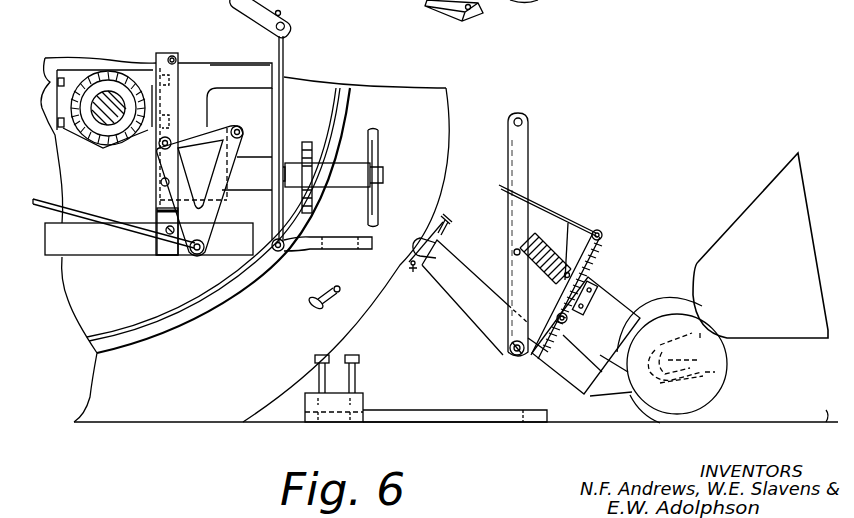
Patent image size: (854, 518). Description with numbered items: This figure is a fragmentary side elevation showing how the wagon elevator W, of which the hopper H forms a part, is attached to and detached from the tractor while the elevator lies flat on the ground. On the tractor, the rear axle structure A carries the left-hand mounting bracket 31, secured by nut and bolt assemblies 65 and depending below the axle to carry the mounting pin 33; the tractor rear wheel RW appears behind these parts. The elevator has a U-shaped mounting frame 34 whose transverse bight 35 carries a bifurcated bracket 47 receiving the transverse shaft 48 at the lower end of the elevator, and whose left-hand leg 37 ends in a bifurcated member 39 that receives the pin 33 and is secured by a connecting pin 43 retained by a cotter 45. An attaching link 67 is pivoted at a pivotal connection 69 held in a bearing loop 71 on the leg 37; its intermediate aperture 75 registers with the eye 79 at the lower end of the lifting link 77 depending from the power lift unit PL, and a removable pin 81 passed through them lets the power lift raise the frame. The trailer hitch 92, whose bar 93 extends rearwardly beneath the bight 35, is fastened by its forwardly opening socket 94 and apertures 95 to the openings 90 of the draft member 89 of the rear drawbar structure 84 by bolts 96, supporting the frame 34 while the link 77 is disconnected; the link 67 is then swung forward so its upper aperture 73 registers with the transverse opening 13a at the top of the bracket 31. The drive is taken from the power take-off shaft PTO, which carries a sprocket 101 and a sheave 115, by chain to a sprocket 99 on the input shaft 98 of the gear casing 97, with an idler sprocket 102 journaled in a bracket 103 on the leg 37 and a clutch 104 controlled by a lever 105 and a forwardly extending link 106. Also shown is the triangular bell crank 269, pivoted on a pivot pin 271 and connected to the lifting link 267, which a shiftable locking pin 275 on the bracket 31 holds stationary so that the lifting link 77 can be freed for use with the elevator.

The rear axle structure A is at (78, 73).
The nut and bolt assemblies 65 is at (52, 100).
The left-hand mounting bracket 31 is at (166, 52).
The transverse opening 13a is at (173, 57).
The mounting pin 33 is at (170, 236).
The triangular bell crank 269 is at (206, 248).
The pivot pin 271 is at (162, 147).
The locking pin 275 is at (162, 183).
The lifting link 267 is at (76, 215).
The rear drawbar structure 84 is at (58, 258).
The power lift unit PL is at (247, 70).
The lifting link 77 is at (284, 68).
The mounting frame 34 is at (330, 0).
The elongated bar 93 is at (485, 12).
The trailer hitch 92 is at (443, 10).
The rear wheel RW is at (446, 91).
The power take-off shaft PTO is at (286, 165).
The sprocket 101 is at (307, 145).
The sheave 115 is at (378, 141).
The eye 79 is at (272, 250).
The draft member 89 is at (292, 251).
The openings 90 is at (356, 250).
The removable pin 81 is at (329, 306).
The pins or bolts 96 is at (350, 354).
The apertures 95 is at (350, 414).
The forwardly opening socket 94 is at (305, 396).
The connecting pin 43 is at (446, 218).
The cotter 45 is at (408, 266).
The bifurcated member 39 is at (428, 260).
The left-hand leg 37 is at (496, 312).
The aperture 73 is at (524, 112).
The attaching link 67 is at (528, 157).
The bearing loop 71 is at (517, 358).
The pivotal connection 69 is at (511, 350).
The bracket 103 is at (548, 345).
The forwardly extending link 106 is at (549, 212).
The lever 105 is at (599, 231).
The clutch 104 is at (569, 225).
The sprocket 99 is at (586, 260).
The input shaft 98 is at (527, 242).
The intermediate aperture 75 is at (513, 252).
The idler sprocket 102 is at (565, 306).
The bifurcated bracket 47 is at (608, 359).
The transverse rear member 35 is at (600, 394).
The gear casing 97 is at (712, 402).
The transverse shaft 48 is at (702, 356).
The hopper H is at (773, 191).
The wagon elevator W is at (826, 422).